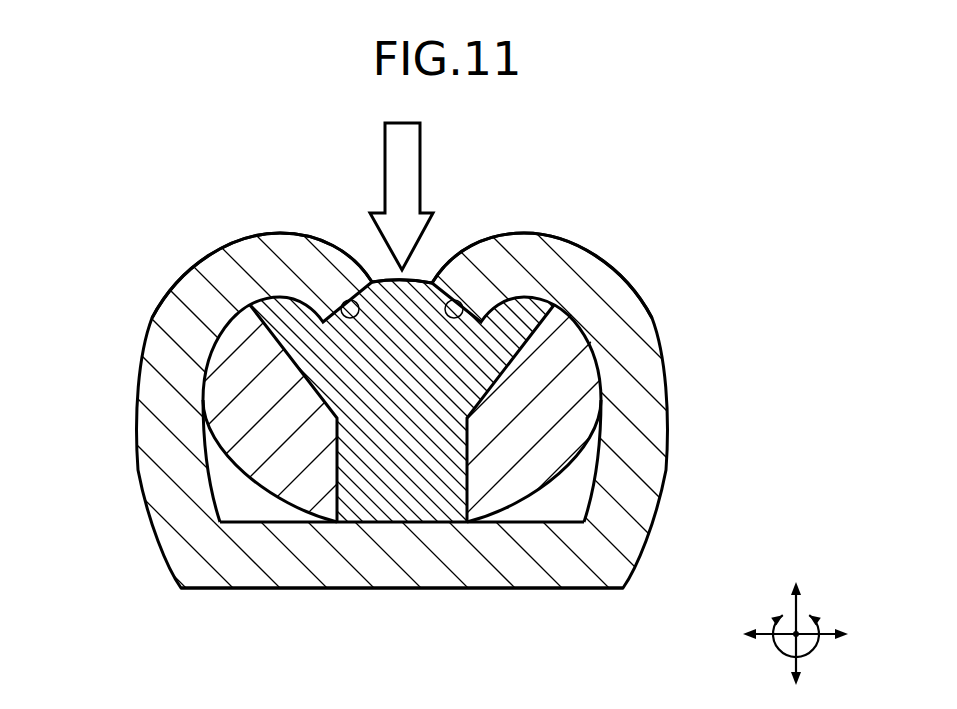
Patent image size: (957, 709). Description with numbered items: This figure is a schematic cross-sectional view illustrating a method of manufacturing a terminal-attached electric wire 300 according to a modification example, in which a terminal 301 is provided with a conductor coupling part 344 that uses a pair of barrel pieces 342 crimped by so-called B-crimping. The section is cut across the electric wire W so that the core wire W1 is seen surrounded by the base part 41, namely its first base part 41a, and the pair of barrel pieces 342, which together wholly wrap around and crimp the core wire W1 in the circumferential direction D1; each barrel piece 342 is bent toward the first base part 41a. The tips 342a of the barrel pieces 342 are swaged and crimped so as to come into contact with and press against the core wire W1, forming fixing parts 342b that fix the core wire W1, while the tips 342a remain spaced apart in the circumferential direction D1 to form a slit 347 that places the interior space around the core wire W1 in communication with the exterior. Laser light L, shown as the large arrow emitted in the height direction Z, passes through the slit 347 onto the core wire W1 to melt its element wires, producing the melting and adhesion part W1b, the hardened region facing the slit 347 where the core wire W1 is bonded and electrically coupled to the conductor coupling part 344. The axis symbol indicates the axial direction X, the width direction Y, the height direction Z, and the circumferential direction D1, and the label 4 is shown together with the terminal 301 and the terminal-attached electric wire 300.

The laser processing apparatus 4 is at (143, 188).
The terminal 301 is at (478, 373).
The terminal-attached electric wire 300 is at (478, 373).
The conductor coupling part 344 is at (106, 281).
The barrel pieces 342 is at (145, 423).
The tips 342a is at (343, 302).
The fixing parts 342b is at (250, 257).
The slit 347 is at (431, 254).
The base part 41 is at (339, 630).
The first base part 41a is at (410, 588).
The electric wire W is at (418, 399).
The core wire W1 is at (556, 489).
The melting and adhesion part W1b is at (530, 366).
The laser light L is at (407, 137).
The height direction Z is at (797, 605).
The axial direction X is at (802, 632).
The width direction Y is at (818, 635).
The circumferential direction D1 is at (783, 655).